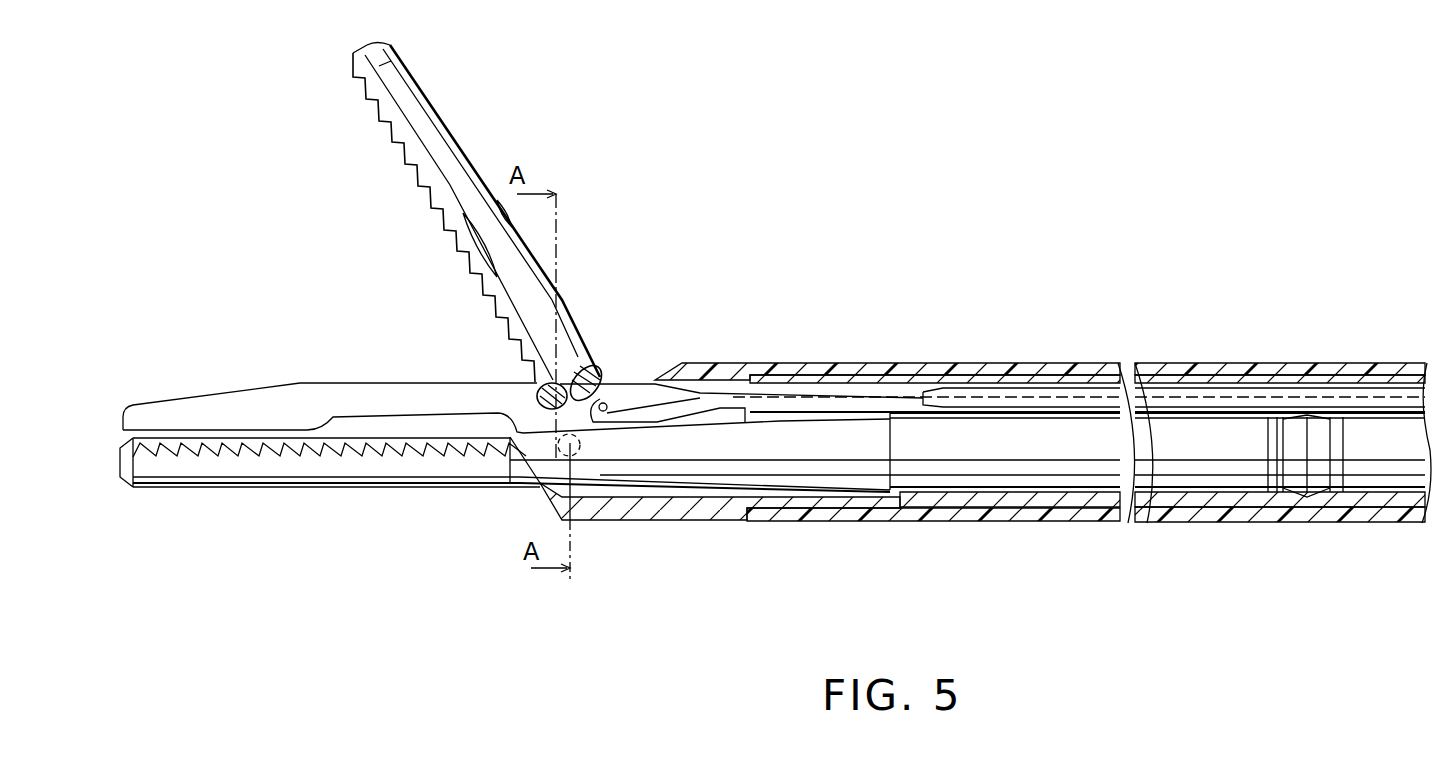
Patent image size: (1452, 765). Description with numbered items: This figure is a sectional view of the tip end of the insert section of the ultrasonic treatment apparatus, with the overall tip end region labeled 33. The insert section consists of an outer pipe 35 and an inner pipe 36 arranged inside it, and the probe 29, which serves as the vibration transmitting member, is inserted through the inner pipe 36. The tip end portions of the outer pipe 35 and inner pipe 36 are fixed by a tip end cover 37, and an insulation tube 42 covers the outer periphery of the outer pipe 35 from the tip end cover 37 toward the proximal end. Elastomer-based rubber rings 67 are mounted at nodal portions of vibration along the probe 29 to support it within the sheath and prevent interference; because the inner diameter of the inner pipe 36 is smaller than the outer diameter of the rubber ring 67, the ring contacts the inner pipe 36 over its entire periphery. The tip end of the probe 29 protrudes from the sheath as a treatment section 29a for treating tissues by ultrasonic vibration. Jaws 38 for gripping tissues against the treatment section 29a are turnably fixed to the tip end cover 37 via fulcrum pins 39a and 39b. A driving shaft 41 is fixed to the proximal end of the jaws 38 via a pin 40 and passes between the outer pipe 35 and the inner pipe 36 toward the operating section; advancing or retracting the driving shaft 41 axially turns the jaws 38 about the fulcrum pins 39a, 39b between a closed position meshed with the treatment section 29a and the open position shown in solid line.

The treatment section 33 is at (583, 113).
The jaws 38 is at (465, 178).
The pin 40 is at (606, 402).
The fulcrum pin 39a is at (581, 457).
The fulcrum pin 39b is at (607, 518).
The treatment section 29a is at (325, 492).
The tip end cover 37 is at (707, 508).
The probe 29 is at (958, 472).
The driving shaft 41 is at (1017, 397).
The outer pipe 35 is at (1312, 373).
The insulation tube 42 is at (1070, 518).
The inner pipe 36 is at (1202, 500).
The rubber ring 67 is at (1322, 480).